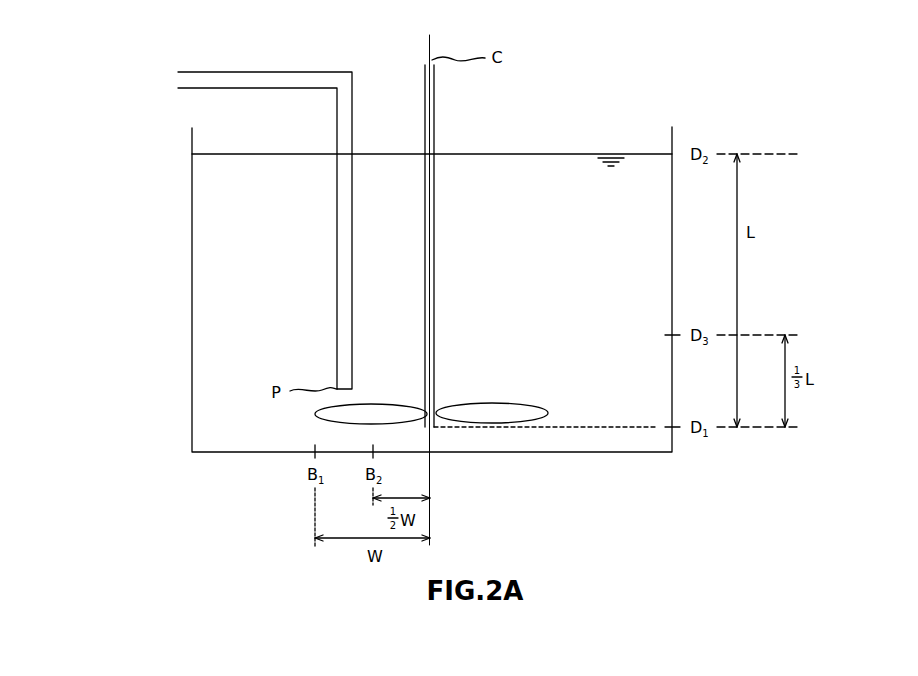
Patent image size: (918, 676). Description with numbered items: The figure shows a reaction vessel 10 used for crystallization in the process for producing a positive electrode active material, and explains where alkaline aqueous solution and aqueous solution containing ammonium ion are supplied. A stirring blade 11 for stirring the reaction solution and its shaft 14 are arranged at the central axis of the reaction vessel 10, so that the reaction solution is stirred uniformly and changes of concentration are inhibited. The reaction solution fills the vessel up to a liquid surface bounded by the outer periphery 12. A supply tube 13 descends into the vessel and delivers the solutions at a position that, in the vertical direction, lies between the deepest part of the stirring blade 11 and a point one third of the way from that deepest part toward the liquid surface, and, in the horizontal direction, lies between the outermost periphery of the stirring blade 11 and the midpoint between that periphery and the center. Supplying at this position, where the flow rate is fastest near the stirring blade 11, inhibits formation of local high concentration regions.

The reaction vessel 10 is at (759, 57).
The stirring blade 11 is at (525, 405).
The outer periphery 12 is at (190, 229).
The supply tube 13 is at (279, 81).
The shaft 14 is at (436, 180).